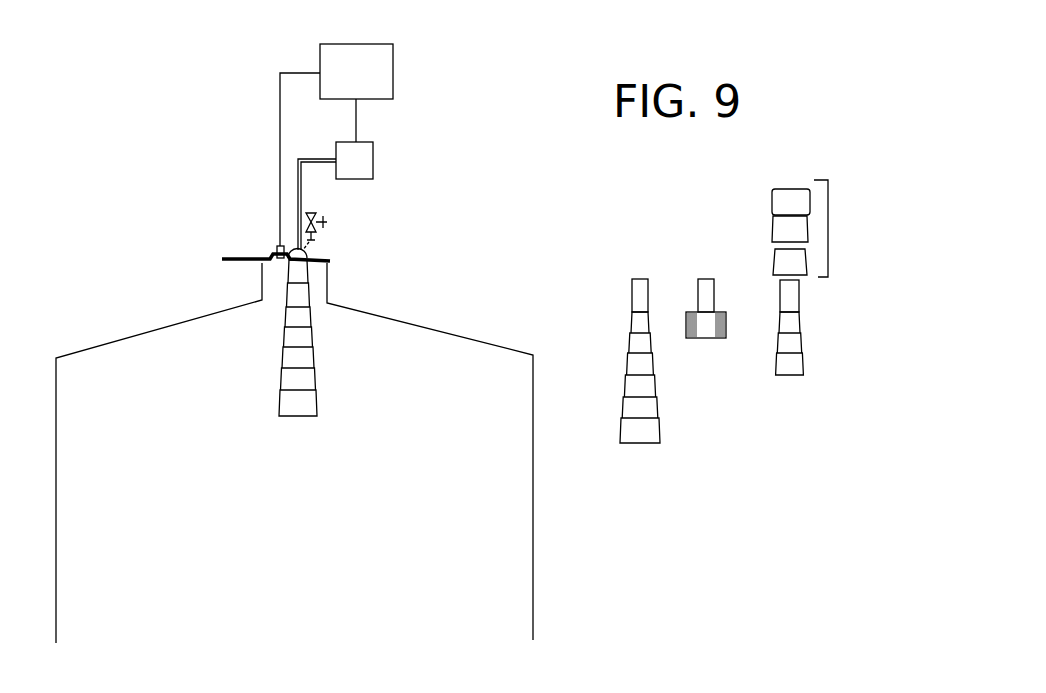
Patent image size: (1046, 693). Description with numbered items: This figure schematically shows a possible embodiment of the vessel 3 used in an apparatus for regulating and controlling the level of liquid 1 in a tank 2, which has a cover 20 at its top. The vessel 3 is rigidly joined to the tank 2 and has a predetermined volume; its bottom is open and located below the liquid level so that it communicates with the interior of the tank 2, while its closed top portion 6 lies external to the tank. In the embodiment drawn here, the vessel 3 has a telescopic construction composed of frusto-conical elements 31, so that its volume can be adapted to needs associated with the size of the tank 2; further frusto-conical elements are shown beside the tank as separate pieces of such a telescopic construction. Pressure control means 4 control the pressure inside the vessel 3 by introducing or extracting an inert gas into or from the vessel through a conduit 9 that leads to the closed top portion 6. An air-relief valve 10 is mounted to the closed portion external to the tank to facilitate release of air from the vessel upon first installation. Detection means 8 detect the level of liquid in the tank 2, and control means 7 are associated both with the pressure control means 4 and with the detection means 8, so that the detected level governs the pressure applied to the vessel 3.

The liquid 1 is at (135, 618).
The tank 2 is at (160, 329).
The vessel 3 is at (353, 336).
The frusto-conical elements 31 is at (281, 338).
The cover 20 is at (222, 259).
The closed top portion 6 is at (308, 250).
The detection means 8 is at (278, 246).
The conduit 9 is at (297, 162).
The air-relief valve 10 is at (325, 222).
The pressure control means 4 is at (373, 163).
The control means 7 is at (393, 72).